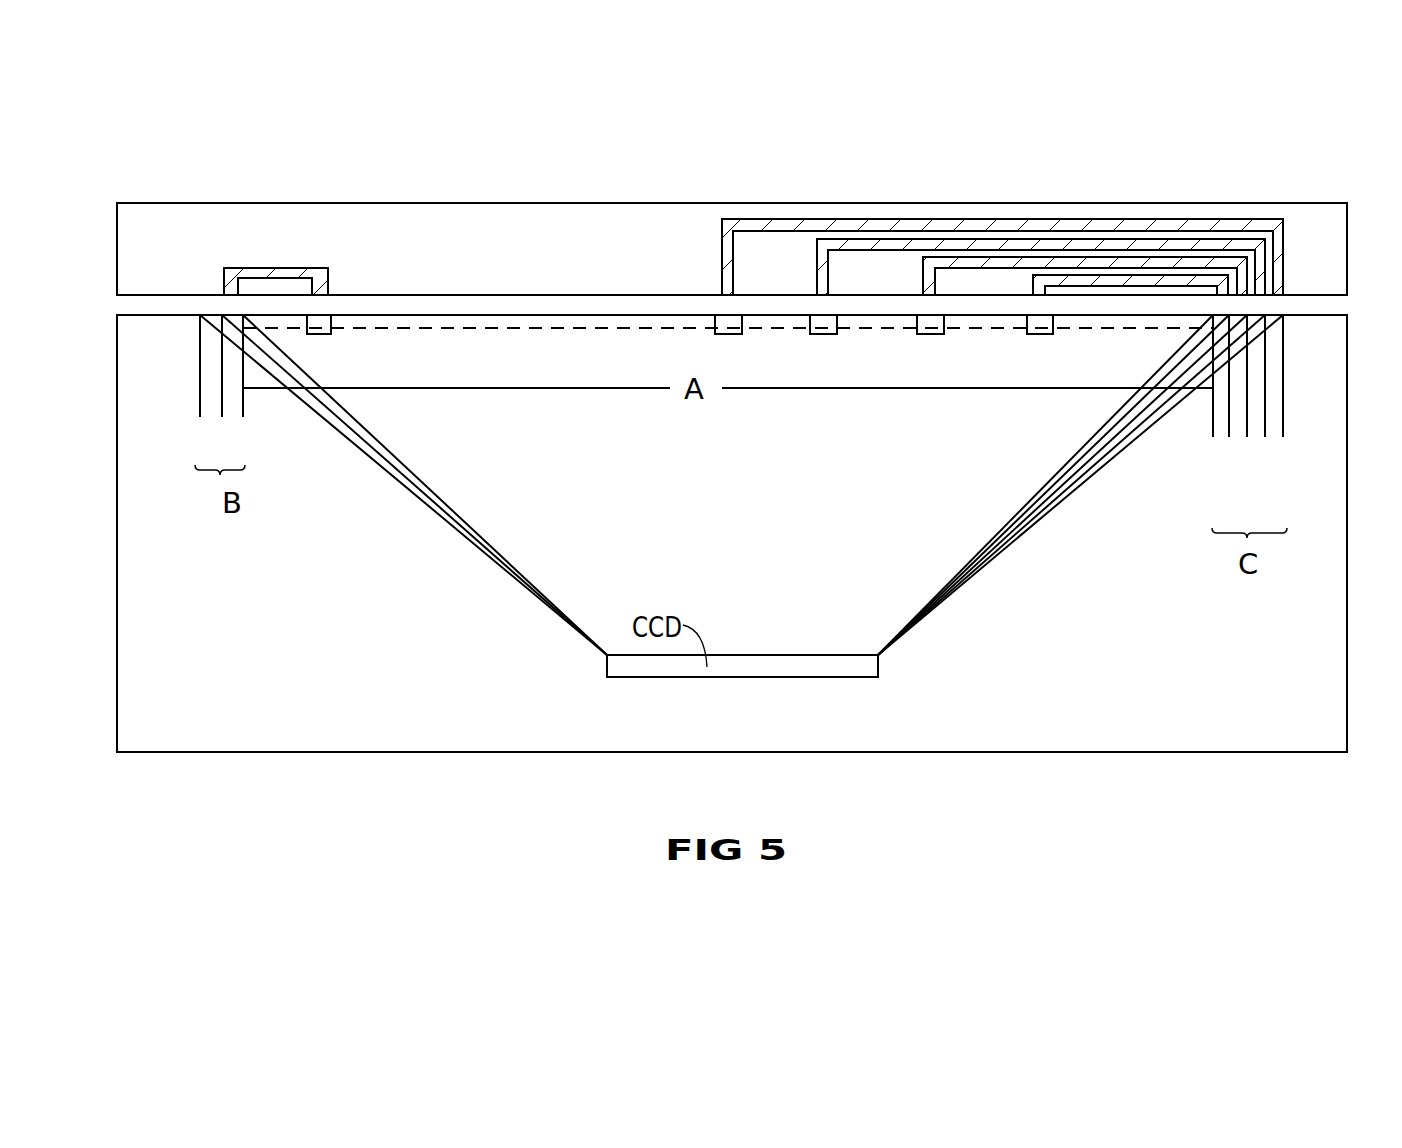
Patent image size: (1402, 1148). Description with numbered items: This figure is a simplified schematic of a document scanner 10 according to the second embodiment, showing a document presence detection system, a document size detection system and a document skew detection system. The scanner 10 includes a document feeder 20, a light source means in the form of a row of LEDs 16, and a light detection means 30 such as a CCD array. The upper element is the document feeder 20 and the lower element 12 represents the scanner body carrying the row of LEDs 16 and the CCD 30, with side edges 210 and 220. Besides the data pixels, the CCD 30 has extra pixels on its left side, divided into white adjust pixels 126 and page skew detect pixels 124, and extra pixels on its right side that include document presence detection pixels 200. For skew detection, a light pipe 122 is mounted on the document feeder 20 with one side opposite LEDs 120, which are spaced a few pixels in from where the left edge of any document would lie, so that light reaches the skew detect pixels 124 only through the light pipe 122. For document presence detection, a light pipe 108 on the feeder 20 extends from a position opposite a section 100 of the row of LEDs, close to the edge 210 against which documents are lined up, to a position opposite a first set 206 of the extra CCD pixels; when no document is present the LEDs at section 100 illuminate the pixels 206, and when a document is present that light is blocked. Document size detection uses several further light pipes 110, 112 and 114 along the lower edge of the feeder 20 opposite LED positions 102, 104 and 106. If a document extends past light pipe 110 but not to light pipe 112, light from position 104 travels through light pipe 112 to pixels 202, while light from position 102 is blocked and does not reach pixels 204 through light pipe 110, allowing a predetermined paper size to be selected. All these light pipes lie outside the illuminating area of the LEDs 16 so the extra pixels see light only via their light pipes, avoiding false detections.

The scanner 10 is at (130, 637).
The substrate 12 is at (160, 315).
The row of LEDs 16 is at (432, 328).
The document feeder 20 is at (182, 227).
The light detection means 30 is at (785, 670).
The section of the row of LEDs 100 is at (727, 334).
The LED position 102 is at (826, 337).
The LED position 104 is at (930, 338).
The LED position 106 is at (1033, 337).
The light pipe 108 is at (722, 233).
The light pipe 110 is at (815, 243).
The light pipe 112 is at (925, 258).
The light pipe 114 is at (1033, 283).
The LEDs 120 is at (317, 335).
The light pipe 122 is at (243, 268).
The page skew detect pixels 124 is at (240, 417).
The white adjust pixels 126 is at (204, 417).
The document presence detection pixels 200 is at (1218, 437).
The CCD pixels 202 is at (1229, 437).
The CCD pixels 204 is at (1247, 437).
The first set of extra CCD pixels 206 is at (1283, 437).
The edge of the scanner 210 is at (117, 513).
The side wall 220 is at (1347, 397).